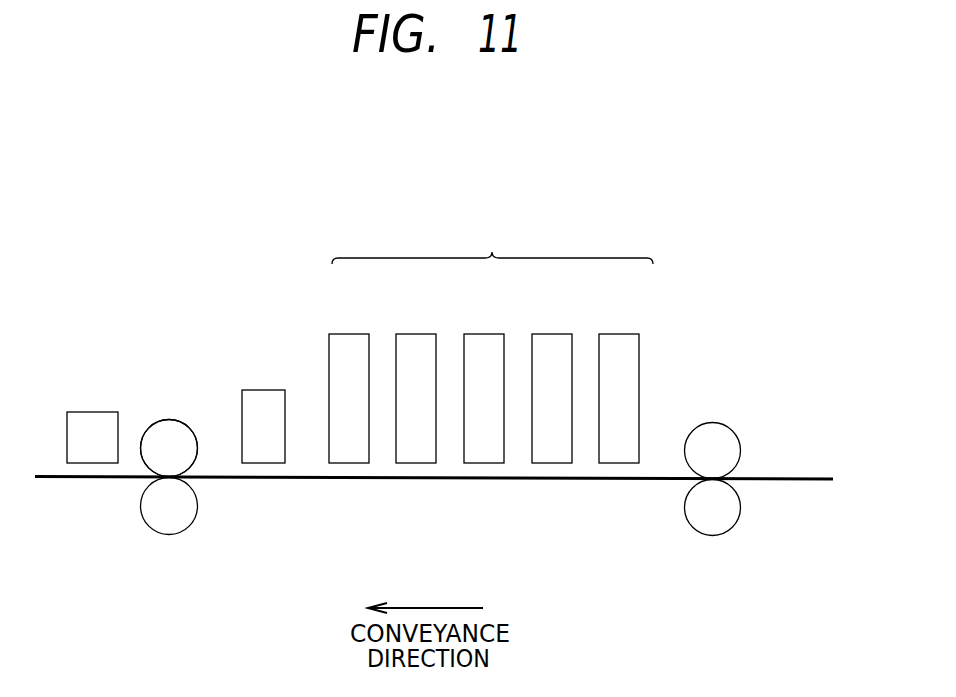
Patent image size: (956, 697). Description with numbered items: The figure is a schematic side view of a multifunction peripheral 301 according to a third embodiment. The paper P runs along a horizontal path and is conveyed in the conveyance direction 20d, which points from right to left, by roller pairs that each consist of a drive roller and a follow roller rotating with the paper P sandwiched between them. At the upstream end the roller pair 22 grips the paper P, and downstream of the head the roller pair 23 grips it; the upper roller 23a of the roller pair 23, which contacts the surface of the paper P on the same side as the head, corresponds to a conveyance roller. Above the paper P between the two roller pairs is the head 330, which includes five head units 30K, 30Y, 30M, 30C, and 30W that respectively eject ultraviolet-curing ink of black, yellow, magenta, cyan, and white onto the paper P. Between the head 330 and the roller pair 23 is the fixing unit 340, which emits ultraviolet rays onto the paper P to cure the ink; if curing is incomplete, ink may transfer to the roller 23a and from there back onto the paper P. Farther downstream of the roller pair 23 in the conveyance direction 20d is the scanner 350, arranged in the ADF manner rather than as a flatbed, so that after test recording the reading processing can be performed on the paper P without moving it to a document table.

The multifunction peripheral 301 is at (655, 130).
The paper P is at (800, 478).
The scanner 350 is at (92, 412).
The fixing unit 340 is at (266, 390).
The roller pair 23 is at (197, 502).
The roller 23a is at (162, 419).
The head 330 is at (491, 343).
The head unit 30K is at (348, 334).
The head unit 30Y is at (415, 334).
The head unit 30M is at (483, 334).
The head unit 30C is at (550, 334).
The head unit 30W is at (618, 334).
The roller pair 22 is at (740, 502).
The conveyance direction 20d is at (431, 607).